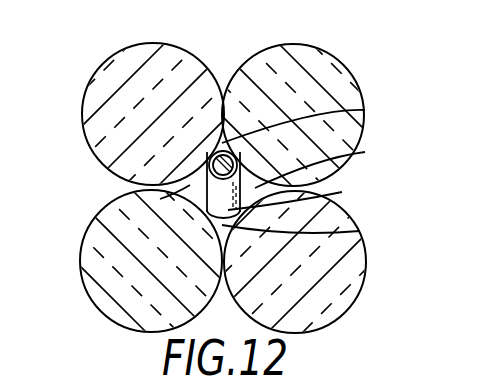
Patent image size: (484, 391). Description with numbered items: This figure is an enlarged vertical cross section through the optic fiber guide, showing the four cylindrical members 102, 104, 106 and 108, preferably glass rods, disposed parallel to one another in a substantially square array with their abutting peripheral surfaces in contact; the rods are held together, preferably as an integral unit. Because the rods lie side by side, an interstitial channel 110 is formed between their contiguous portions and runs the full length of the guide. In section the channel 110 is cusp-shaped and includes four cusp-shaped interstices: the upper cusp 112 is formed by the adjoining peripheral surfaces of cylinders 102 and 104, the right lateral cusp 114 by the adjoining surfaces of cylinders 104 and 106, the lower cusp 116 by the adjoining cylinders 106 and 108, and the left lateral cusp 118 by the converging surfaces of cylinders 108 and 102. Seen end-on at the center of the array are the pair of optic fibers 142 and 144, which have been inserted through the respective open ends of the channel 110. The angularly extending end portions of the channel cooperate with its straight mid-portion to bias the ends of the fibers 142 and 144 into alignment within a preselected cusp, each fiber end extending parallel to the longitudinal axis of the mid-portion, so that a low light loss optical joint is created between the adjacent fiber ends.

The cylindrical member 102 is at (107, 72).
The cylindrical member 104 is at (329, 67).
The cylindrical member 106 is at (329, 287).
The cylindrical member 108 is at (98, 297).
The interstitial channel 110 is at (230, 109).
The upper cusp 112 is at (365, 110).
The right lateral cusp 114 is at (365, 152).
The lower cusp 116 is at (360, 231).
The left lateral cusp 118 is at (160, 199).
The optic fiber 142 is at (212, 166).
The optic fiber 144 is at (342, 192).